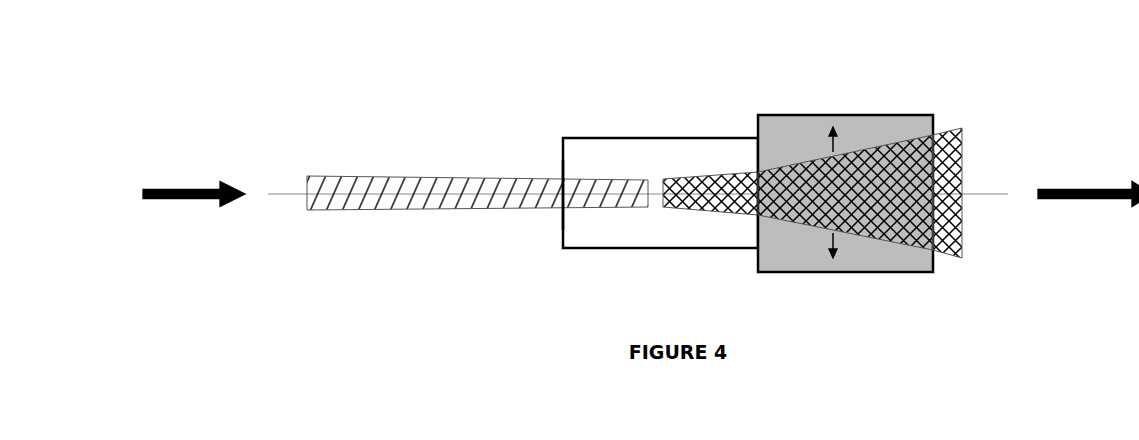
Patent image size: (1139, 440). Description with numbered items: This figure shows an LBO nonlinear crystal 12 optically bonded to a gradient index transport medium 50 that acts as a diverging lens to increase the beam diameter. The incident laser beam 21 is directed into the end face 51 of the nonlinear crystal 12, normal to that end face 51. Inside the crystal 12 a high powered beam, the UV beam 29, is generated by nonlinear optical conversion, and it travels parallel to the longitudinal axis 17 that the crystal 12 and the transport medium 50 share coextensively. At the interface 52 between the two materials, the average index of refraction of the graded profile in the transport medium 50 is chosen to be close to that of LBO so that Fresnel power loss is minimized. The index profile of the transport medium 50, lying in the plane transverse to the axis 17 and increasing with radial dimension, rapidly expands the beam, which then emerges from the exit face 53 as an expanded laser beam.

The LBO crystal 12 is at (665, 138).
The longitudinal axis 17 is at (290, 198).
The incident laser beam 21 is at (357, 176).
The UV beam 29 is at (872, 238).
The transport medium 50 is at (846, 178).
The end face 51 is at (562, 227).
The interface 52 is at (758, 158).
The exit face 53 is at (935, 120).